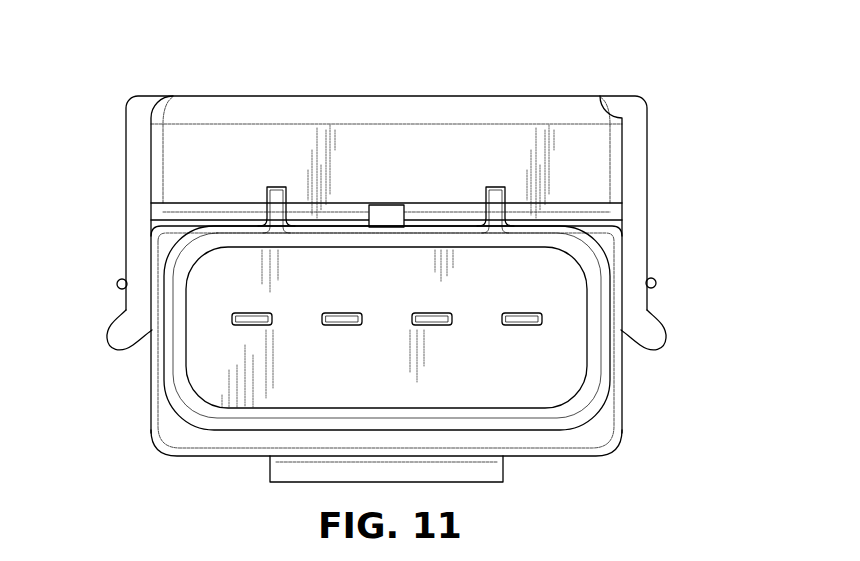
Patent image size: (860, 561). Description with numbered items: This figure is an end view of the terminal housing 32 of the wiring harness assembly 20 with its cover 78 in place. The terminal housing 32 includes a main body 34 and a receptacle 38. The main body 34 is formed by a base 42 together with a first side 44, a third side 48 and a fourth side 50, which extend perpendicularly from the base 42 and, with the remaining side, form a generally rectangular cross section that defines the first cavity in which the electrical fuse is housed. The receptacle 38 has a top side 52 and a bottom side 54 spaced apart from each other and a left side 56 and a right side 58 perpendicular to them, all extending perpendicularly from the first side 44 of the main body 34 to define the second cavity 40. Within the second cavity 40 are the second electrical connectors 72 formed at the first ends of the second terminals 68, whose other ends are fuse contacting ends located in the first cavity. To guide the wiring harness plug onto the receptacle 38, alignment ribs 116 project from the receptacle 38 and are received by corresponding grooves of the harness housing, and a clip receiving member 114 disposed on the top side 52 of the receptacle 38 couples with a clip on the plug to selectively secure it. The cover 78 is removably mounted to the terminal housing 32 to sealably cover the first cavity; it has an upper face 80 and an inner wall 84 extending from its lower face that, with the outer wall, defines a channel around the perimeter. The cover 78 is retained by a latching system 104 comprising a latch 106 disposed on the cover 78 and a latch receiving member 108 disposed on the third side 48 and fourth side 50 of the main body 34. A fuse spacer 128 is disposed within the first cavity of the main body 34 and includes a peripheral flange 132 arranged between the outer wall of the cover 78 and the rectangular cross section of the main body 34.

The wiring harness assembly 20 is at (72, 99).
The terminal housing 32 is at (620, 457).
The main body 34 is at (383, 462).
The first side 44 is at (178, 433).
The receptacle 38 is at (190, 263).
The second cavity 40 is at (517, 290).
The base 42 is at (222, 457).
The third side 48 is at (150, 400).
The fourth side 50 is at (623, 396).
The top side 52 is at (521, 241).
The bottom side 54 is at (360, 410).
The left side 56 is at (173, 332).
The right side 58 is at (593, 315).
The second terminal 68 is at (394, 354).
The second electrical connector 72 is at (258, 326).
The cover 78 is at (206, 142).
The upper face 80 is at (561, 96).
The inner wall 84 is at (188, 193).
The latching system 104 is at (107, 209).
The latch 106 is at (125, 320).
The latch receiving member 108 is at (117, 283).
The clip receiving member 114 is at (390, 212).
The alignment rib 116 is at (279, 198).
The fuse spacer 128 is at (479, 179).
The peripheral flange 132 is at (615, 212).